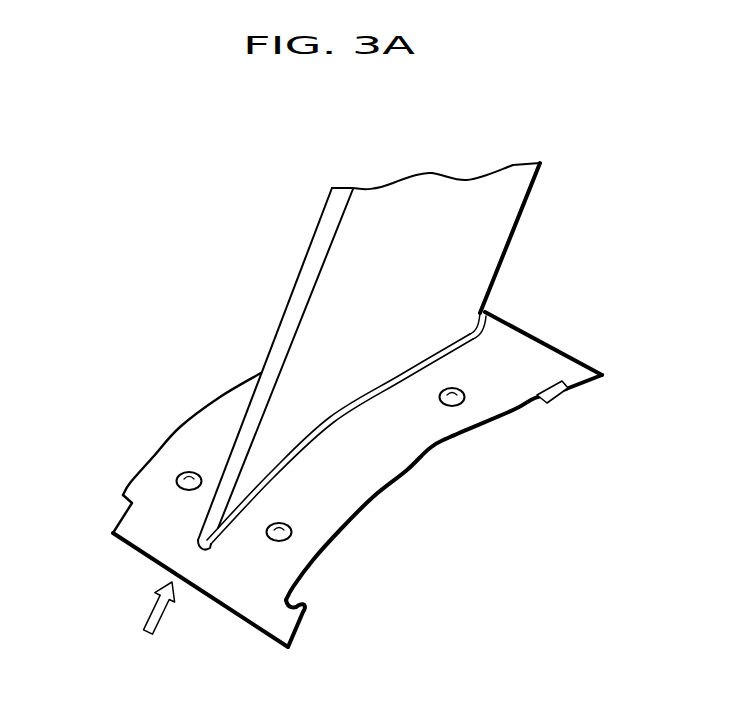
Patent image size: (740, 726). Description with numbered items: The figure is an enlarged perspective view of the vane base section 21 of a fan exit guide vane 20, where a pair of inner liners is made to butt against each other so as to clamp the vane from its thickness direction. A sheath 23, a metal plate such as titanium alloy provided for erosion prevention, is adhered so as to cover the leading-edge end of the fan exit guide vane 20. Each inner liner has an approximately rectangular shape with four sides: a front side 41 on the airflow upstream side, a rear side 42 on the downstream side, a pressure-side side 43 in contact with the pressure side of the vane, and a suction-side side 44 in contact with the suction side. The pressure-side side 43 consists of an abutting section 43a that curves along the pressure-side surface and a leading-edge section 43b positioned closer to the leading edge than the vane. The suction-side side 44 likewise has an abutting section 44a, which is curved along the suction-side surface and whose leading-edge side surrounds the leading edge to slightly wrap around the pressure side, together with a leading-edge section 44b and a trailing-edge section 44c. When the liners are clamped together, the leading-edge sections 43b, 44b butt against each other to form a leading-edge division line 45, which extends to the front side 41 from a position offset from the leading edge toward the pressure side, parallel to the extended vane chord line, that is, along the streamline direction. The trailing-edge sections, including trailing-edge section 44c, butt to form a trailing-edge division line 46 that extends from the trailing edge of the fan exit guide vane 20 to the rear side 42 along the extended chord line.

The fan exit guide vane 20 is at (422, 203).
The vane base section 21 is at (433, 364).
The sheath 23 is at (310, 245).
The front side 41 is at (133, 550).
The rear side 42 is at (567, 350).
The pressure-side side 43 is at (158, 428).
The abutting section 43a is at (177, 430).
The leading-edge section 43b is at (120, 513).
The suction-side side 44 is at (463, 517).
The abutting section 44a is at (373, 497).
The leading-edge section 44b is at (298, 623).
The trailing-edge section 44c is at (578, 390).
The leading-edge division line 45 is at (203, 550).
The trailing-edge division line 46 is at (481, 312).